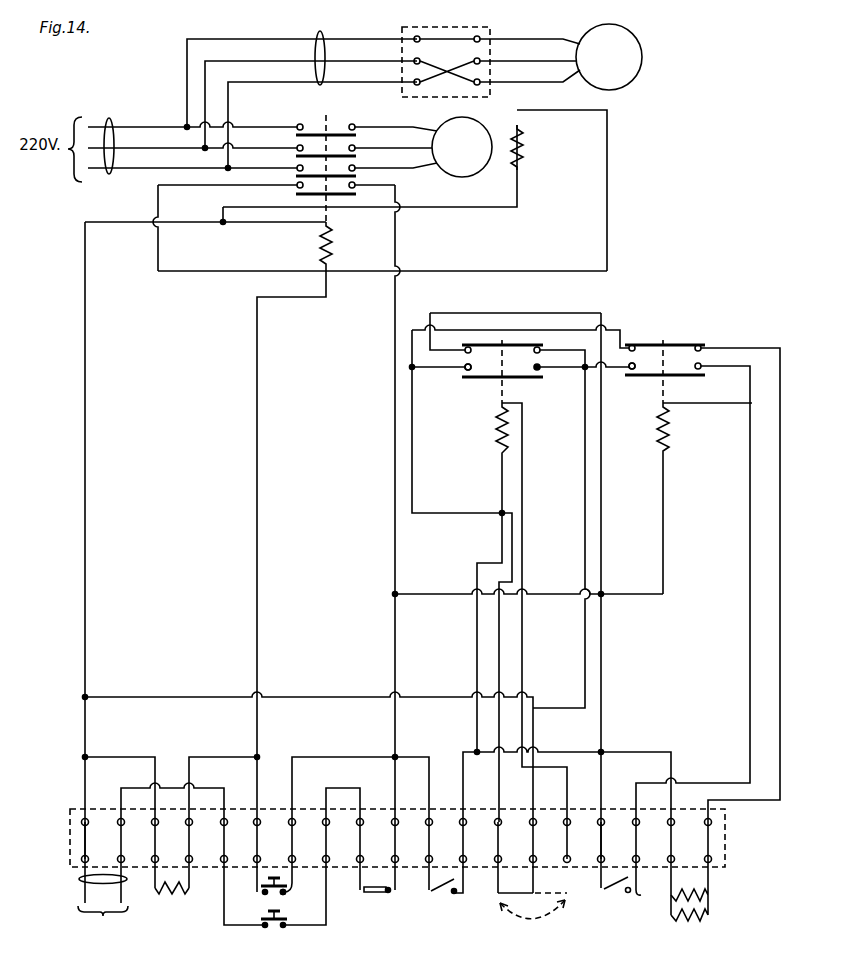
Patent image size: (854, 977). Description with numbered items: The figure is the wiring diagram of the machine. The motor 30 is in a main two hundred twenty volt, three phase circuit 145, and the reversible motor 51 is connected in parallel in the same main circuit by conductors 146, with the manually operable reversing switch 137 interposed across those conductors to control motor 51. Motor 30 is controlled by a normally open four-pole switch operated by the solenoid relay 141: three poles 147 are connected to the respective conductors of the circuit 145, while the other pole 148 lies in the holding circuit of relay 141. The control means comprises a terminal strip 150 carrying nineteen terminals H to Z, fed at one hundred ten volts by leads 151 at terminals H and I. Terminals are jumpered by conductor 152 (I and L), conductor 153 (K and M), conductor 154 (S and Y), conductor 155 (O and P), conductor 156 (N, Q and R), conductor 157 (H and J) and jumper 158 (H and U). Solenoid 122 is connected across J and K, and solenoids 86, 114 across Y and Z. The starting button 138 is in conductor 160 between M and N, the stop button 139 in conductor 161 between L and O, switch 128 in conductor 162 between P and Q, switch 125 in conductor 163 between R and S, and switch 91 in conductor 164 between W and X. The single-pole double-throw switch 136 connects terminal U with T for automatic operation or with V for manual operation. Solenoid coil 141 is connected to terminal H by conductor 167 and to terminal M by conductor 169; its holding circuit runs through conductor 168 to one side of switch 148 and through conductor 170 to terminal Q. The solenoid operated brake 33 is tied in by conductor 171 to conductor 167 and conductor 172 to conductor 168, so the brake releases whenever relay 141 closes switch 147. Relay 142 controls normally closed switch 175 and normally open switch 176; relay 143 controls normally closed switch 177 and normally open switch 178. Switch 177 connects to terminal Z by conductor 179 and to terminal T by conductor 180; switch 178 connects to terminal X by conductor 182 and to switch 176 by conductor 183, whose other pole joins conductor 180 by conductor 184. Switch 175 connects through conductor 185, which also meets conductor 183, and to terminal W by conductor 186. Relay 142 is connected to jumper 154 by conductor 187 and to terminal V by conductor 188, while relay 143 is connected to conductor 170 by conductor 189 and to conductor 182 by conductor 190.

The main circuit 145 is at (110, 118).
The conductors 146 is at (322, 31).
The three poles of switch 147 is at (314, 112).
The other pole of switch 148 is at (298, 195).
The reversing switch 137 is at (414, 84).
The reversible motor 51 is at (640, 56).
The motor 30 is at (472, 174).
The solenoid operated brake 33 is at (523, 160).
The relay 141 is at (322, 240).
The conductor 169 is at (172, 276).
The conductor 171 is at (433, 208).
The conductor 172 is at (605, 230).
The conductor 167 is at (87, 441).
The conductor 168 is at (255, 432).
The conductor 170 is at (393, 443).
The normally closed switch 175 is at (485, 341).
The normally open switch 176 is at (487, 380).
The normally closed switch 177 is at (676, 345).
The normally open switch 178 is at (646, 378).
The conductor 179 is at (760, 347).
The conductor 183 is at (563, 372).
The conductor 184 is at (446, 370).
The conductor 190 is at (718, 403).
The relay 142 is at (496, 421).
The relay 143 is at (665, 452).
The conductor 180 is at (460, 513).
The conductor 185 is at (583, 475).
The conductor 186 is at (602, 548).
The conductor 187 is at (475, 573).
The conductor 182 is at (748, 523).
The conductor 189 is at (640, 598).
The conductor 188 is at (523, 645).
The jumper 158 is at (312, 697).
The conductor 157 is at (133, 757).
The conductor 153 is at (215, 757).
The conductor 156 is at (396, 768).
The conductor 155 is at (337, 788).
The conductor 154 is at (628, 752).
The conductor 152 is at (131, 786).
The terminal strip 150 is at (70, 809).
The leads 151 is at (79, 878).
The solenoid 122 is at (163, 896).
The starting button 138 is at (264, 897).
The conductor 160 is at (294, 890).
The conductor 161 is at (250, 926).
The stop button 139 is at (281, 935).
The conductor 162 is at (354, 884).
The switch 128 is at (362, 893).
The switch 125 is at (446, 897).
The conductor 163 is at (464, 896).
The single-pole double-throw switch 136 is at (526, 923).
The switch 91 is at (609, 896).
The conductor 164 is at (634, 895).
The solenoid 86 is at (690, 893).
The solenoid 114 is at (695, 916).